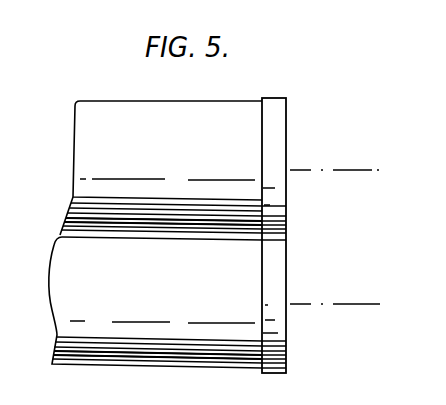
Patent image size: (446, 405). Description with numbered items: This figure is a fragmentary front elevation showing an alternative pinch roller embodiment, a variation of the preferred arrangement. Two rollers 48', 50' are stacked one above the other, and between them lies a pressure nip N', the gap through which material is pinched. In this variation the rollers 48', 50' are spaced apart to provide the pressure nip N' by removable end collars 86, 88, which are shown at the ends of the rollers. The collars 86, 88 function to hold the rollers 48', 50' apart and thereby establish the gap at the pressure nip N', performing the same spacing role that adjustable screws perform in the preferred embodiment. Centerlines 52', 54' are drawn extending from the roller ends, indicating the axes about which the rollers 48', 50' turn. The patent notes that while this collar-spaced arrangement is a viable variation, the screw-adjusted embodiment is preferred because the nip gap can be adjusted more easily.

The roller 48' is at (167, 150).
The roller 50' is at (155, 302).
The upper center line 52' is at (334, 155).
The lower center line 54' is at (335, 319).
The removable end collar 86 is at (275, 139).
The removable end collar 88 is at (286, 363).
The pressure nip N' is at (161, 232).